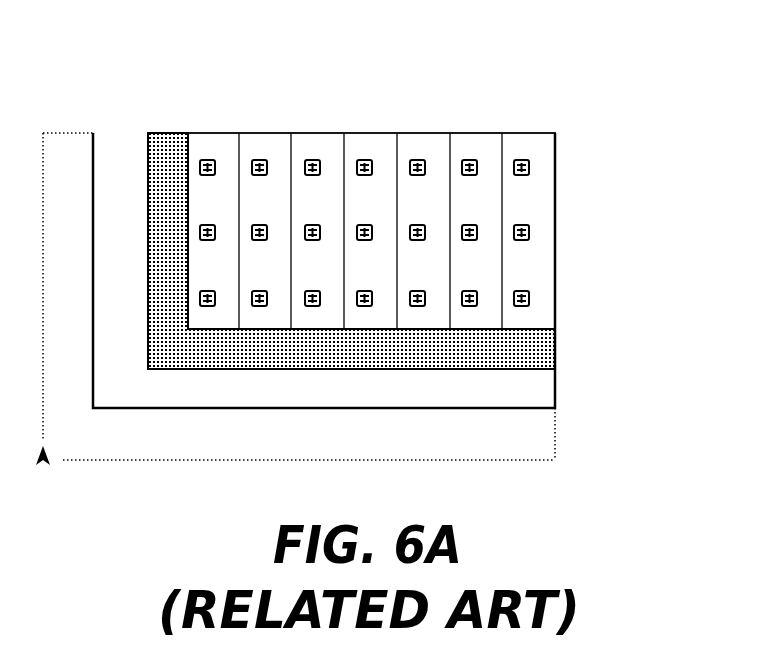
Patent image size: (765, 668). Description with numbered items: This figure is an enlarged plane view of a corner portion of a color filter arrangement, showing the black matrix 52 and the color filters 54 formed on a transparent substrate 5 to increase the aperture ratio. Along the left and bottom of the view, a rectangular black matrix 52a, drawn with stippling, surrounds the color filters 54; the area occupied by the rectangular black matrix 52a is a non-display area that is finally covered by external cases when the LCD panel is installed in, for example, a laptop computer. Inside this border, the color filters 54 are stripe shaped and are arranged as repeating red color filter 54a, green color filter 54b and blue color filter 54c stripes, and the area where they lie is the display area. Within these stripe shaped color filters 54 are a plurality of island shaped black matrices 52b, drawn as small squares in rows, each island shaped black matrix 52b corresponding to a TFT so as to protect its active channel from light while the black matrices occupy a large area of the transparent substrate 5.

The transparent substrate 5 is at (548, 398).
The black matrix 52 is at (668, 206).
The rectangular black matrix 52a is at (556, 340).
The island shaped black matrix 52b is at (530, 232).
The color filters 54 is at (395, 63).
The red color filter 54a is at (208, 135).
The green color filter 54b is at (273, 135).
The blue color filter 54c is at (332, 135).